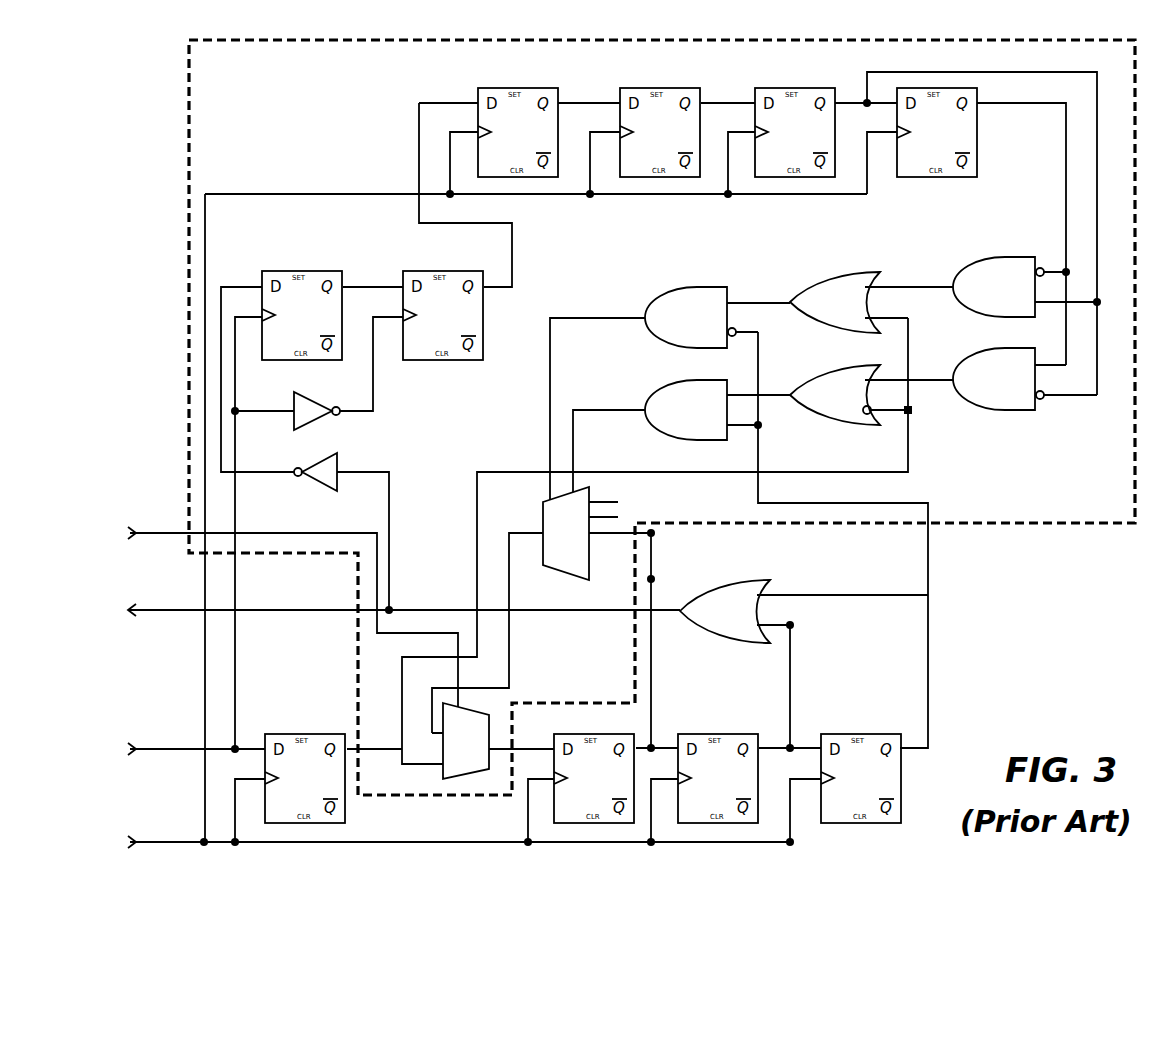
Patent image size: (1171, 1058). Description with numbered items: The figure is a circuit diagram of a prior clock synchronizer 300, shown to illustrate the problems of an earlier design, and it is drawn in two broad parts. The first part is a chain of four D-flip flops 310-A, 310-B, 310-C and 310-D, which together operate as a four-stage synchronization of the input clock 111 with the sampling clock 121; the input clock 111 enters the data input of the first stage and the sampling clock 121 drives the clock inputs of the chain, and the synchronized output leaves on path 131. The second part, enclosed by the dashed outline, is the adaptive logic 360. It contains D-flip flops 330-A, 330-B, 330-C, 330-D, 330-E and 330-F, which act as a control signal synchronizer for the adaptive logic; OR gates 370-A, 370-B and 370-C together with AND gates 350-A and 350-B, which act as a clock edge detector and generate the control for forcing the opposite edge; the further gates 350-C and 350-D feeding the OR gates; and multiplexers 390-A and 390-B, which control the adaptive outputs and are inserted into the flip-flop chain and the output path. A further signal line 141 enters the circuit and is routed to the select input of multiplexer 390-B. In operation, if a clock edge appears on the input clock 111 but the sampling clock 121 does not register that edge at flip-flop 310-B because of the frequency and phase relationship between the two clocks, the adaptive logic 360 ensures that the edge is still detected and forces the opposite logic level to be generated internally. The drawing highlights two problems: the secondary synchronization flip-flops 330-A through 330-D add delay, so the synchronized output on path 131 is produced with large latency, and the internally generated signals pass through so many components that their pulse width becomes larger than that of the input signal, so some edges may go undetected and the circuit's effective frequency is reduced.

The prior synchronizer 300 is at (1035, 597).
The adaptive logic 360 is at (318, 100).
The D-flip flop 330-A is at (499, 139).
The D-flip flop 330-B is at (641, 139).
The D-flip flop 330-C is at (776, 139).
The D-flip flop 330-D is at (918, 139).
The D-flip flop 330-E is at (283, 322).
The D-flip flop 330-F is at (424, 322).
The D-flip flop 310-A is at (286, 785).
The D-flip flop 310-B is at (575, 785).
The D-flip flop 310-C is at (699, 785).
The D-flip flop 310-D is at (842, 785).
The AND gate 350-A is at (664, 325).
The AND gate 350-B is at (668, 417).
The AND gate 350-C is at (980, 294).
The AND gate 350-D is at (980, 386).
The OR gate 370-A is at (807, 302).
The OR gate 370-B is at (807, 395).
The OR gate 370-C is at (708, 611).
The multiplexer 390-A is at (546, 540).
The multiplexer 390-B is at (447, 747).
The input signal line 141 is at (146, 537).
The path 131 is at (144, 614).
The input clock 111 is at (189, 745).
The sampling clock 121 is at (189, 837).